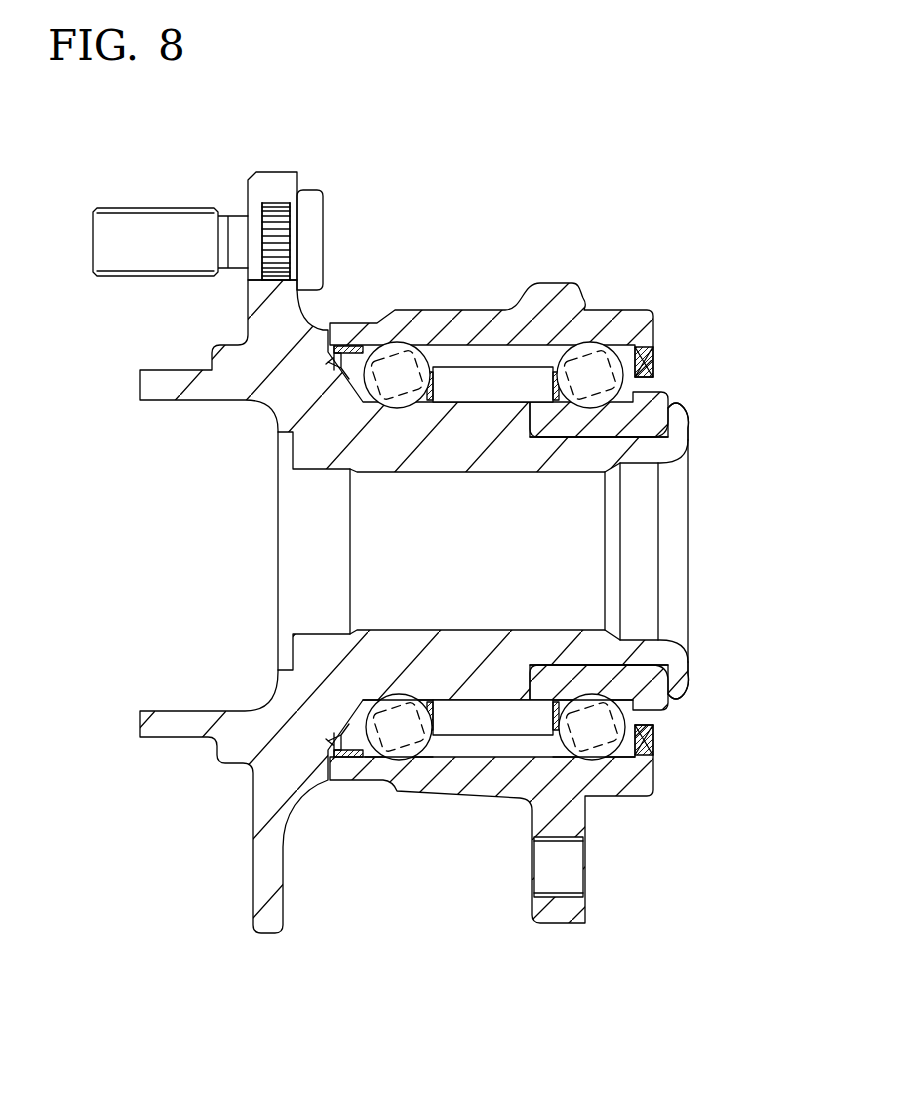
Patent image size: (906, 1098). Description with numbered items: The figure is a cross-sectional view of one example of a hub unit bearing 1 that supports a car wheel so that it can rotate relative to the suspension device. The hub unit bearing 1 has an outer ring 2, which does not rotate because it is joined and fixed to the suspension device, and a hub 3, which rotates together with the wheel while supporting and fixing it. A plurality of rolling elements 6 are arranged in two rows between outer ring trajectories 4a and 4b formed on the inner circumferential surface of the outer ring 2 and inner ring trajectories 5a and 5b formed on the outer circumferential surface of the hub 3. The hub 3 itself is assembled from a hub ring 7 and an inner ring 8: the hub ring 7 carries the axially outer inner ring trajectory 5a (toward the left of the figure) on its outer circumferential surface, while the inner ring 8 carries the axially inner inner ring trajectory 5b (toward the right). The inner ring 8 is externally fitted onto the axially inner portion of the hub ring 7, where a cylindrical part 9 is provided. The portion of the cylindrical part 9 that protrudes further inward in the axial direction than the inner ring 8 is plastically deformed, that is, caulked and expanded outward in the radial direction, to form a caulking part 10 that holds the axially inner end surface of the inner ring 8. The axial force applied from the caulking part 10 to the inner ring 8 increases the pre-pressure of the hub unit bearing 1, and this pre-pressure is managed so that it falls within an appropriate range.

The hub unit bearing 1 is at (627, 265).
The outer ring 2 is at (556, 318).
The hub 3 is at (138, 377).
The outer ring trajectory 4a is at (390, 762).
The outer ring trajectory 4b is at (597, 758).
The inner ring trajectory 5a is at (395, 703).
The inner ring trajectory 5b is at (592, 702).
The rolling elements 6 is at (570, 355).
The hub ring 7 is at (293, 380).
The inner ring 8 is at (627, 407).
The cylindrical part 9 is at (633, 457).
The caulking part 10 is at (677, 420).